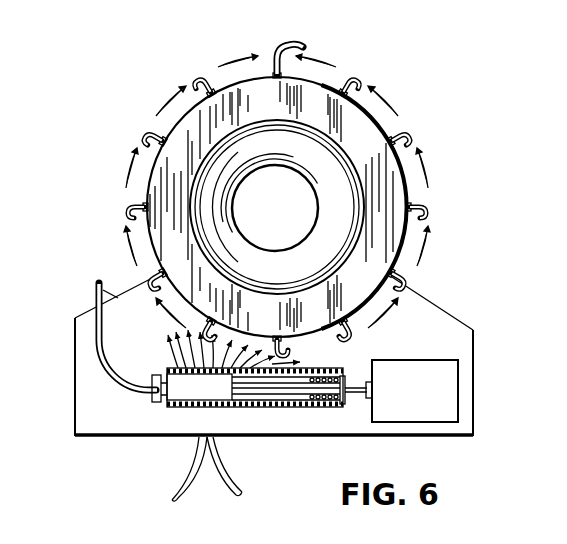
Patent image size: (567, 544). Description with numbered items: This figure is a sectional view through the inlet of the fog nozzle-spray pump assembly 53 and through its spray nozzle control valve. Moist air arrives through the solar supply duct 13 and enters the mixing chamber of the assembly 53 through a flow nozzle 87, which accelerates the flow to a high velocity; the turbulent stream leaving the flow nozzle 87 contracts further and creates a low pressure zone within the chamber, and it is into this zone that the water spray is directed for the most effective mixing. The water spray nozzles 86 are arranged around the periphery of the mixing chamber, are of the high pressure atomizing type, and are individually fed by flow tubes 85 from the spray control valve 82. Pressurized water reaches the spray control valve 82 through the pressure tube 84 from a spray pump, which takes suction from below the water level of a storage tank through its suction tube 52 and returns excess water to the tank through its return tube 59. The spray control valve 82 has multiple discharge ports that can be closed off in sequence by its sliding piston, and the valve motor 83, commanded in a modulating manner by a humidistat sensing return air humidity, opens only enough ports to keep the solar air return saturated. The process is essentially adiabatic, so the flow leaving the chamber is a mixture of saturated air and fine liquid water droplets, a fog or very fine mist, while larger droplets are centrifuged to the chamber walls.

The solar supply duct 13 is at (350, 167).
The fog nozzle-spray pump assembly 53 is at (178, 113).
The flow nozzle 87 is at (316, 217).
The water spray nozzles 86 is at (274, 70).
The flow tubes 85 is at (286, 55).
The pressure tube 84 is at (95, 309).
The valve motor 83 is at (423, 360).
The spray control valve 82 is at (170, 410).
The suction tube 52 is at (186, 470).
The return tube 59 is at (228, 466).